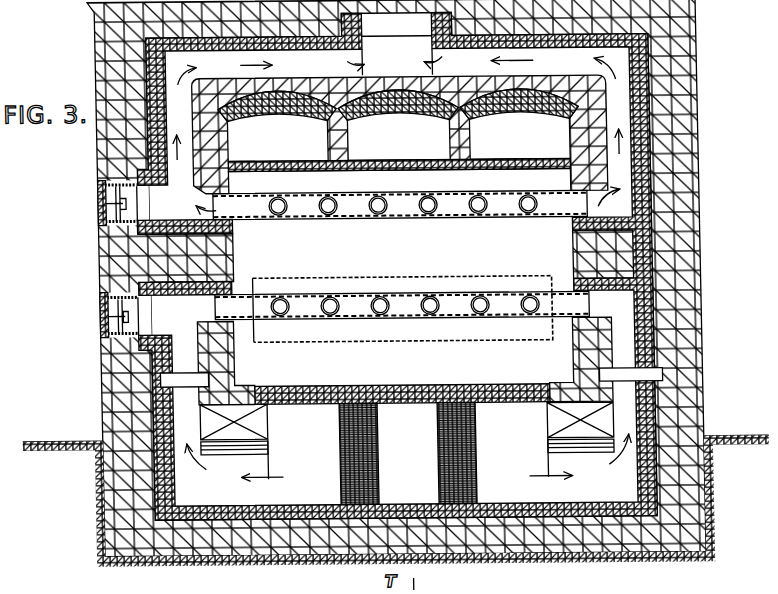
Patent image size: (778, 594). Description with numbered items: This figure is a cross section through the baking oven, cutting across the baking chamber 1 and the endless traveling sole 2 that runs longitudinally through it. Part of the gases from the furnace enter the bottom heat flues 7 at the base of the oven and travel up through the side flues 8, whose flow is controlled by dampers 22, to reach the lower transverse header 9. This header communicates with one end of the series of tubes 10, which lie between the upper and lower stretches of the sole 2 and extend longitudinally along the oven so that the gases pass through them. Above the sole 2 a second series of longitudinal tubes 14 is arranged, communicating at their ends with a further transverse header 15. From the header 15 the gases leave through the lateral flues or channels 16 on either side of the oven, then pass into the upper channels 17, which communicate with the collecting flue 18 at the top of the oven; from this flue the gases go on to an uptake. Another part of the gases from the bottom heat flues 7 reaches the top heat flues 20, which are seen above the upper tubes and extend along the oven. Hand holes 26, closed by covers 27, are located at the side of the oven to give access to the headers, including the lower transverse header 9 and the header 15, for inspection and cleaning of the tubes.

The baking chamber 1 is at (403, 255).
The endless traveling sole 2 is at (447, 341).
The bottom heat flues 7 is at (406, 453).
The side flues 8 is at (406, 433).
The lower transverse header 9 is at (507, 306).
The tubes 10 is at (476, 359).
The longitudinal tubes 14 is at (517, 234).
The transverse header 15 is at (450, 213).
The lateral flues 16 is at (403, 157).
The upper channels 17 is at (396, 68).
The collecting flue 18 is at (395, 59).
The top heat flues 20 is at (398, 120).
The dampers 22 is at (711, 384).
The hand holes 26 is at (146, 318).
The covers 27 is at (100, 320).